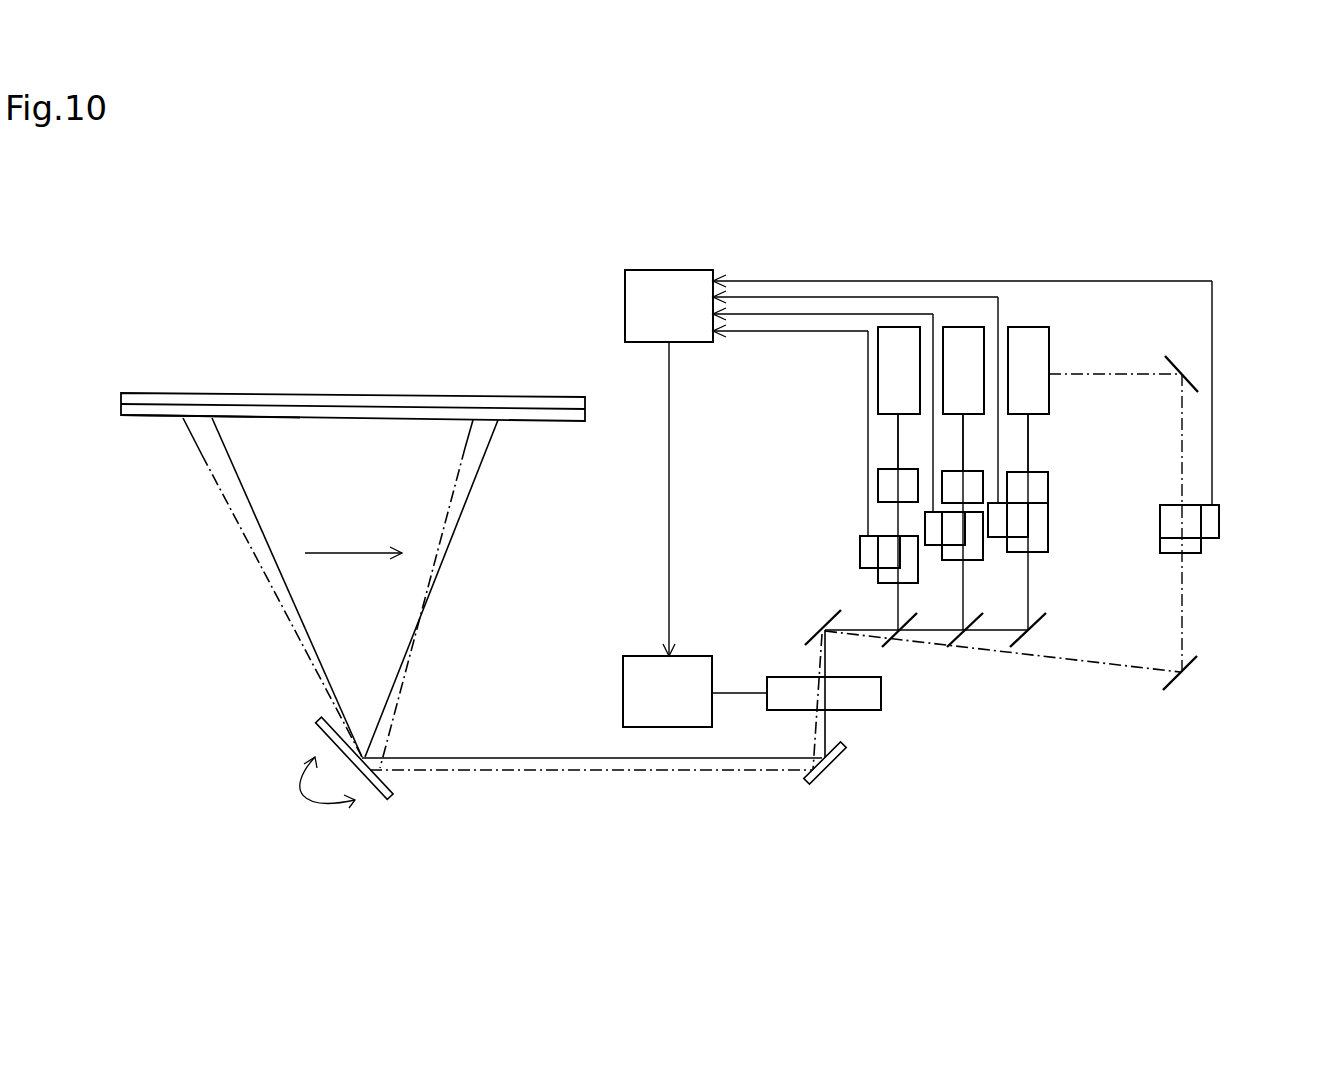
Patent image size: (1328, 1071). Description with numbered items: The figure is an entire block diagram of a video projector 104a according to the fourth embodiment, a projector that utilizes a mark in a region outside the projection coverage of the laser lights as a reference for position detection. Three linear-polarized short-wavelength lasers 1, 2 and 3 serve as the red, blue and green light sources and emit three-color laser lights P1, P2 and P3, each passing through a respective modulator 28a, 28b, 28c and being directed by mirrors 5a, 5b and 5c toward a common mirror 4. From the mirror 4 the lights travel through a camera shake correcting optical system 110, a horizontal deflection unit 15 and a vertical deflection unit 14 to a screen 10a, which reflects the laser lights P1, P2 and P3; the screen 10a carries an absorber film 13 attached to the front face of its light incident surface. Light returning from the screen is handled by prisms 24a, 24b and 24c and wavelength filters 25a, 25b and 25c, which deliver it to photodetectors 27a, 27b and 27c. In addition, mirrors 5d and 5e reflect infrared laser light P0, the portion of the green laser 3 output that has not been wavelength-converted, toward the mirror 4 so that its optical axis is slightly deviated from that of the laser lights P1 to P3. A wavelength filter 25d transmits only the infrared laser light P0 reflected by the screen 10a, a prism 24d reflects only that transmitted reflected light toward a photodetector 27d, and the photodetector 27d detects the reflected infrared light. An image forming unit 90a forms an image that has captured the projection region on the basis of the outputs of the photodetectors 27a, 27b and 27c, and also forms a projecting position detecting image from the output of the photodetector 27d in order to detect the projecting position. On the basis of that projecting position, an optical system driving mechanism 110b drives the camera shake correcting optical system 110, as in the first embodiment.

The video projector 104a is at (218, 318).
The screen 10a is at (432, 394).
The absorber film 13 is at (150, 418).
The vertical deflection unit 14 is at (320, 738).
The horizontal deflection unit 15 is at (840, 762).
The mirror 4 is at (812, 637).
The mirror 5a is at (897, 650).
The mirror 5b is at (970, 650).
The mirror 5c is at (1030, 650).
The mirror 5d is at (1178, 355).
The mirror 5e is at (1185, 690).
The laser 1 is at (913, 325).
The laser 2 is at (972, 325).
The green laser 3 is at (1036, 325).
The modulator 28a is at (878, 482).
The modulator 28b is at (983, 480).
The modulator 28c is at (1048, 480).
The photodetector 27a is at (860, 552).
The photodetector 27b is at (925, 528).
The photodetector 27c is at (1020, 527).
The photodetector 27d is at (1219, 512).
The prism 24a is at (883, 553).
The prism 24b is at (985, 560).
The prism 24c is at (1048, 520).
The prism 24d is at (1201, 540).
The wavelength filter 25a is at (918, 585).
The wavelength filter 25b is at (985, 565).
The wavelength filter 25c is at (1048, 548).
The wavelength filter 25d is at (1200, 555).
The image forming unit 90a is at (625, 290).
The optical system driving mechanism 110b is at (623, 672).
The camera shake correcting optical system 110 is at (868, 712).
The infrared laser light P0 is at (653, 772).
The laser light P1 is at (897, 427).
The laser light P2 is at (963, 440).
The laser light P3 is at (1028, 430).